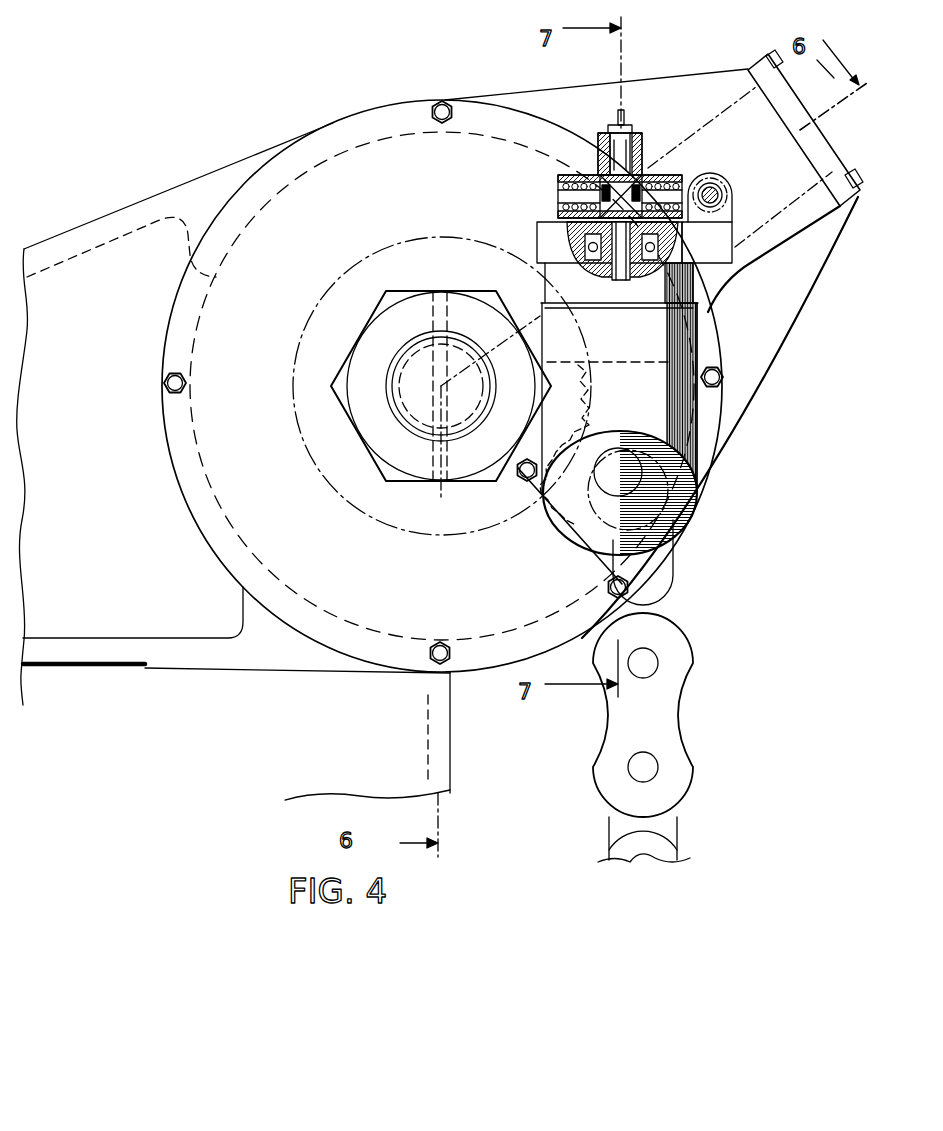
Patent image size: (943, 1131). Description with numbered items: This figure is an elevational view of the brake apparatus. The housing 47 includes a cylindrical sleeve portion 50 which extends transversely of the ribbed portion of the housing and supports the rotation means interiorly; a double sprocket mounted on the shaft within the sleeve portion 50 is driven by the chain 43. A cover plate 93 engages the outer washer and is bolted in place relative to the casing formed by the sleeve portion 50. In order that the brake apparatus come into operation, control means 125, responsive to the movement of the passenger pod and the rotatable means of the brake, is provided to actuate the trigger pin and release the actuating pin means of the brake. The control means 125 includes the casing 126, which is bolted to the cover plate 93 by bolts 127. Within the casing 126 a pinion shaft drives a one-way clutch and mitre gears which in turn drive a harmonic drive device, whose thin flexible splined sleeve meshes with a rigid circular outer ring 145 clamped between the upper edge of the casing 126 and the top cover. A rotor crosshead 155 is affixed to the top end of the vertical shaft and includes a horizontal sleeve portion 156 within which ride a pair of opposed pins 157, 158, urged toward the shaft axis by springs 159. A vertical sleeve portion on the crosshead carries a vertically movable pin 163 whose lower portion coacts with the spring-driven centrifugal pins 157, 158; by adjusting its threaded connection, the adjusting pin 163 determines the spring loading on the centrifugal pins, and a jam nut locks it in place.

The chain 43 is at (660, 728).
The housing 47 is at (114, 214).
The cylindrical sleeve portion 50 is at (341, 125).
The cover plate 93 is at (511, 585).
The control means 125 is at (713, 427).
The casing 126 is at (643, 393).
The bolts 127 is at (723, 377).
The rigid circular outer ring 145 is at (720, 242).
The rotor crosshead 155 is at (545, 218).
The horizontal sleeve portion 156 is at (567, 177).
The pin 157 is at (563, 192).
The pin 158 is at (693, 178).
The springs 159 is at (580, 177).
The vertically movable pin 163 is at (643, 172).